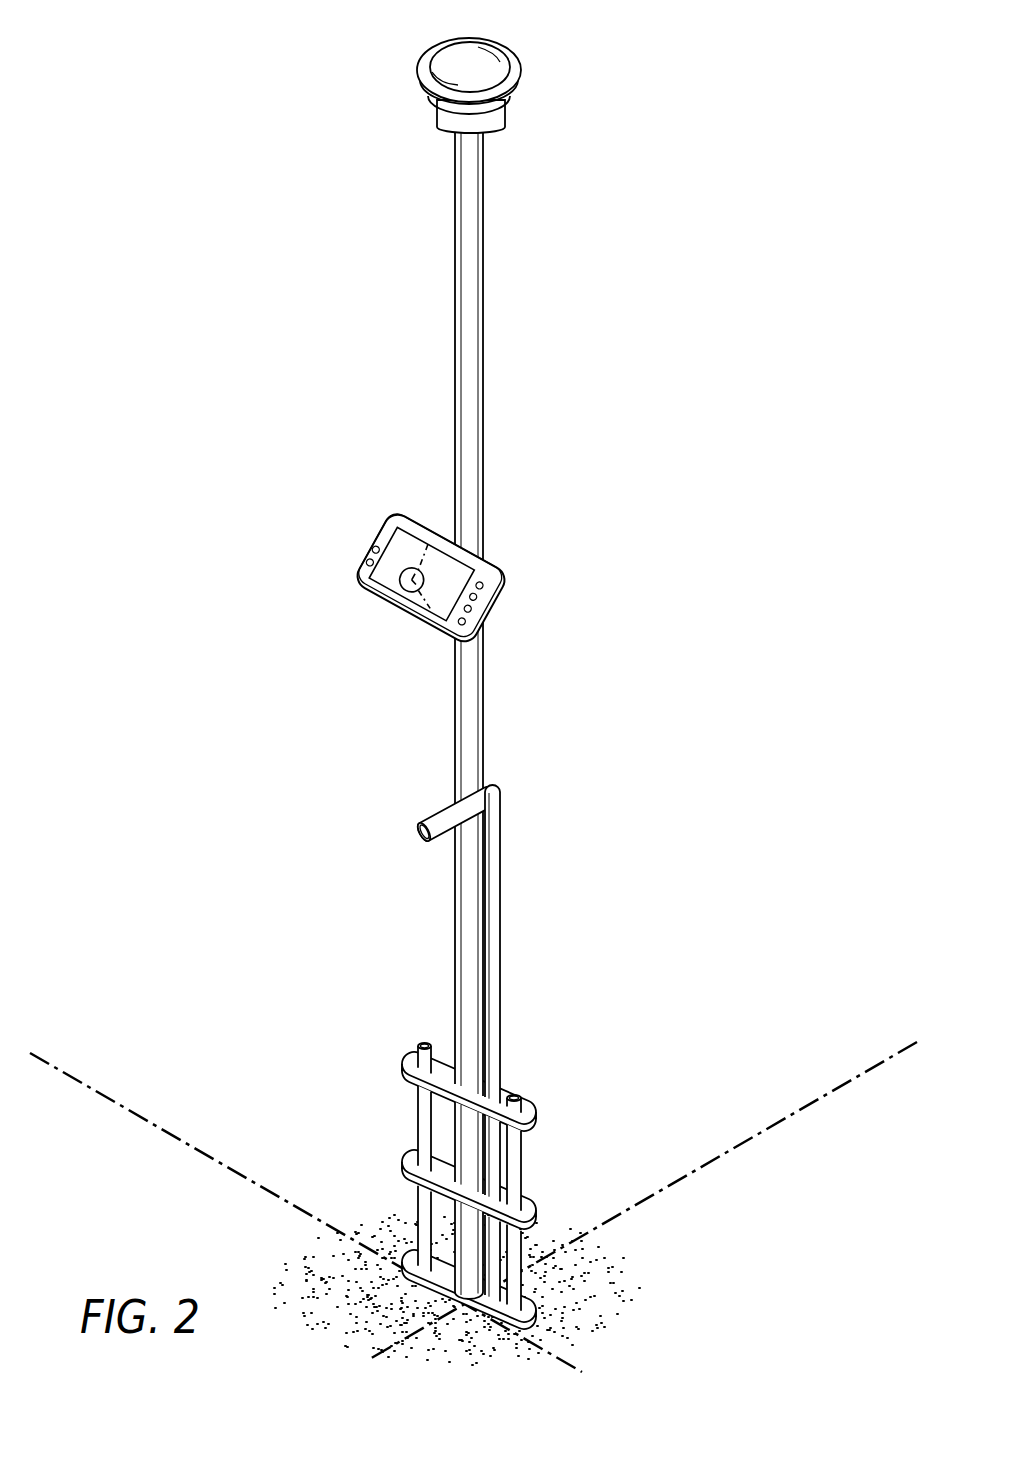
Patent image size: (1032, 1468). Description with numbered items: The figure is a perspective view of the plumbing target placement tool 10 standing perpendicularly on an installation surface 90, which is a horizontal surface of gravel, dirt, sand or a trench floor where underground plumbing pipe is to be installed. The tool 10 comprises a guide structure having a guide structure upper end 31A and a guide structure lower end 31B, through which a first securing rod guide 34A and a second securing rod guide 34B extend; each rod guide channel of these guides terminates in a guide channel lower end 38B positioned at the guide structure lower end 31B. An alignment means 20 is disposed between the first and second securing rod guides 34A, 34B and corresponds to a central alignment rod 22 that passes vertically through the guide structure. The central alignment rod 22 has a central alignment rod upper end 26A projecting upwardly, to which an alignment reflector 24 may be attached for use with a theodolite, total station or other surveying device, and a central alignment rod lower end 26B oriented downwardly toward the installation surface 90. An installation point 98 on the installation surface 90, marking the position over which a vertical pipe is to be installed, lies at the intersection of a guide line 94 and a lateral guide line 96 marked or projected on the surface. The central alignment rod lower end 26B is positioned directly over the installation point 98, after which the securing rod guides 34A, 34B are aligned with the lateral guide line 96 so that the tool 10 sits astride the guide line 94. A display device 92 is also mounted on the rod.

The plumbing target placement tool 10 is at (507, 1135).
The alignment means 20 is at (415, 669).
The central alignment rod 22 is at (473, 307).
The alignment reflector 24 is at (488, 66).
The central alignment rod upper end 26A is at (471, 147).
The central alignment rod lower end 26B is at (455, 1308).
The guide structure upper end 31A is at (538, 1060).
The guide structure lower end 31B is at (550, 1326).
The first securing rod guide 34A is at (418, 1047).
The second securing rod guide 34B is at (521, 1100).
The guide channel lower end 38B is at (458, 1303).
The installation surface 90 is at (731, 1240).
The display / data collector 92 is at (495, 582).
The guide line 94 is at (695, 1168).
The lateral guide line 96 is at (200, 1150).
The installation point 98 is at (470, 1302).